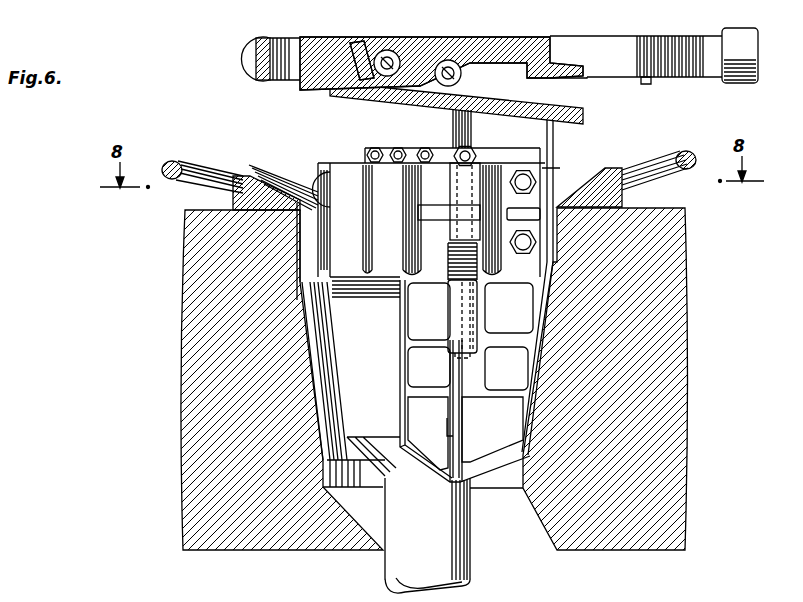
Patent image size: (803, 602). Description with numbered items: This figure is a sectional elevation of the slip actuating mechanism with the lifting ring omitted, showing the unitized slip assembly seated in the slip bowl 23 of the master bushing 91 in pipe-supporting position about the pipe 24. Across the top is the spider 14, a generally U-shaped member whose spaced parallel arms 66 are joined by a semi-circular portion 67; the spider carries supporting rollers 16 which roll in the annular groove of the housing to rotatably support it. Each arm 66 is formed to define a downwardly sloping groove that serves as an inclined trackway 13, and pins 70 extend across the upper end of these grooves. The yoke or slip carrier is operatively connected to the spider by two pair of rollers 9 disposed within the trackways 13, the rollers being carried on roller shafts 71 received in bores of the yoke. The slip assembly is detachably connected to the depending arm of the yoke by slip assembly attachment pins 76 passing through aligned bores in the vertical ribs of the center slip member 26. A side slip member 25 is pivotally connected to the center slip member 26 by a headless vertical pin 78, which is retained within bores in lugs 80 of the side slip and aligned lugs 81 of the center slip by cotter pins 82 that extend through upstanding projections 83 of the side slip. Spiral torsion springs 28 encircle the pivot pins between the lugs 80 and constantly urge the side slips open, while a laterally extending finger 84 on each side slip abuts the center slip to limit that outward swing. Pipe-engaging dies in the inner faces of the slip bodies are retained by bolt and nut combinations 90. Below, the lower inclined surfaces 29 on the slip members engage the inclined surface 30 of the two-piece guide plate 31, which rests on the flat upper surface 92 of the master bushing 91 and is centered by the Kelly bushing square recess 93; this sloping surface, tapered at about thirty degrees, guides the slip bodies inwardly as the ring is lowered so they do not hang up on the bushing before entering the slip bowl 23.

The rollers 9 is at (388, 78).
The inclined trackways 13 is at (518, 76).
The spider 14 is at (605, 48).
The supporting rollers 16 is at (250, 60).
The slip bowl 23 is at (320, 378).
The pipe 24 is at (397, 531).
The side slip member 25 is at (357, 276).
The center slip member 26 is at (527, 413).
The torsion springs 28 is at (545, 258).
The lower inclined surfaces 29 is at (415, 463).
The inclined surface 30 is at (268, 187).
The guide plate 31 is at (250, 193).
The arms 66 is at (308, 48).
The semi-circular portion 67 is at (700, 77).
The pins 70 is at (353, 42).
The roller shafts 71 is at (480, 91).
The slip assembly attachment pins 76 is at (520, 245).
The vertical pin 78 is at (646, 85).
The lugs 80 is at (480, 298).
The lugs 81 is at (450, 188).
The cotter pins 82 is at (492, 160).
The upstanding projections 83 is at (470, 145).
The laterally extending finger 84 is at (428, 222).
The bolt and nut combinations 90 is at (401, 148).
The master bushing 91 is at (212, 483).
The flat upper surface 92 is at (682, 208).
The Kelly bushing square recess 93 is at (297, 263).